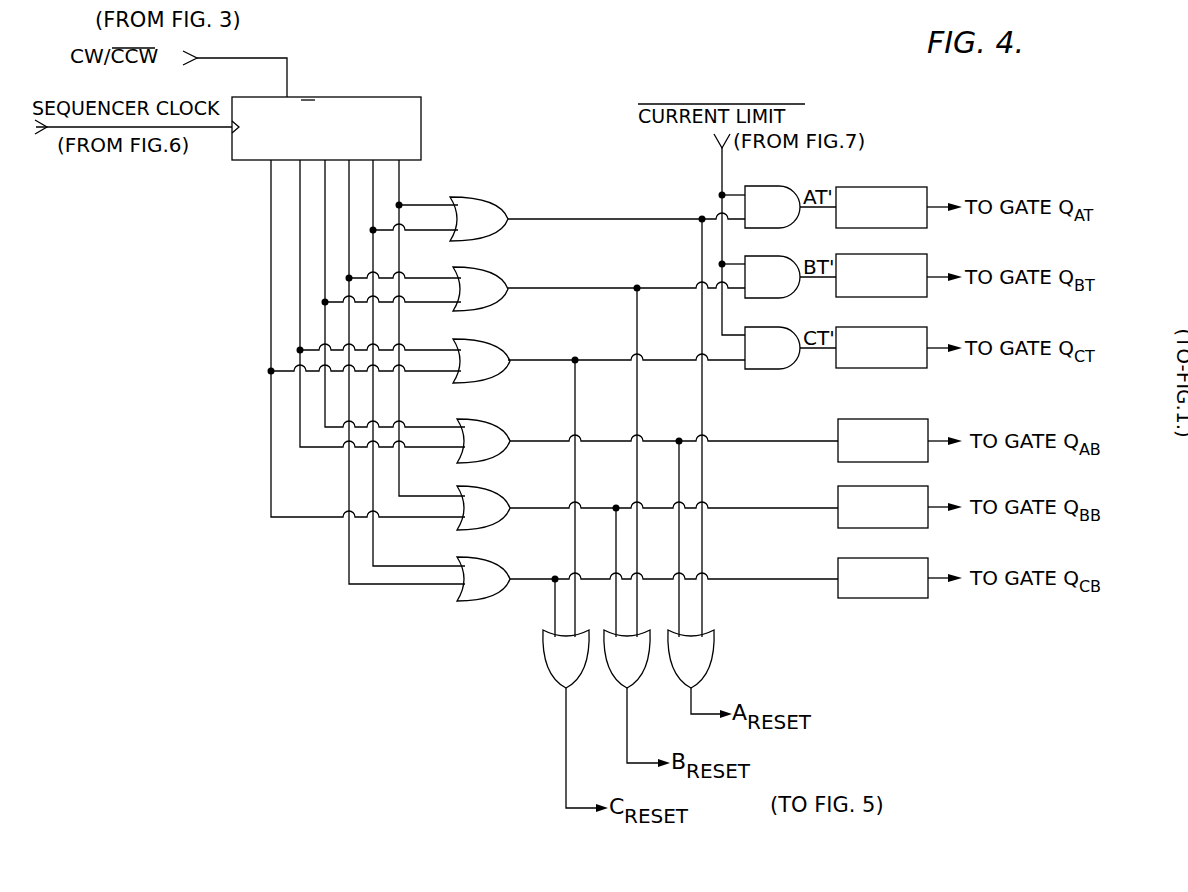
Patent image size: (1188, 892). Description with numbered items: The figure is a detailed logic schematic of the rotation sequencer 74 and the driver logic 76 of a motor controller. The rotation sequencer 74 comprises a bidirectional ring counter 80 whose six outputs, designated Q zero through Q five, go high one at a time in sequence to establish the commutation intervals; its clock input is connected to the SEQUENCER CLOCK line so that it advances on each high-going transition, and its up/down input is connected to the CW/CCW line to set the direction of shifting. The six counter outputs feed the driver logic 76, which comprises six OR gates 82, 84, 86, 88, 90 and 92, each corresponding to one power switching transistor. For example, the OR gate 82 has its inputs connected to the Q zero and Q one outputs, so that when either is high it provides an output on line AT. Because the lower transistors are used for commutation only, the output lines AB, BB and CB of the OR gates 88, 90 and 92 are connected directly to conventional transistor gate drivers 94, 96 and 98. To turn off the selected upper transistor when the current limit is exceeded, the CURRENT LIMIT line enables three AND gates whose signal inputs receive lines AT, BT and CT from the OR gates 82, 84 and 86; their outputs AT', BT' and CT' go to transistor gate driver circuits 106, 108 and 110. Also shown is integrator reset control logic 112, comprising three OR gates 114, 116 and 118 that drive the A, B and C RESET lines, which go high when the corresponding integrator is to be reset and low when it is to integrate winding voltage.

The rotation sequencer 74 is at (452, 68).
The driver logic 76 is at (611, 184).
The bidirectional ring counter 80 is at (366, 97).
The OR gate 82 is at (479, 198).
The OR gate 84 is at (491, 270).
The OR gate 86 is at (495, 343).
The OR gate 88 is at (498, 425).
The OR gate 90 is at (500, 496).
The OR gate 92 is at (495, 569).
The transistor gate driver 94 is at (905, 419).
The transistor gate driver 96 is at (914, 486).
The transistor gate driver 98 is at (914, 558).
The transistor gate driver circuit 106 is at (897, 187).
The transistor gate driver circuit 108 is at (913, 254).
The transistor gate driver circuit 110 is at (916, 327).
The integrator reset control logic 112 is at (516, 671).
The OR gate 114 is at (705, 656).
The OR gate 116 is at (634, 672).
The OR gate 118 is at (572, 672).